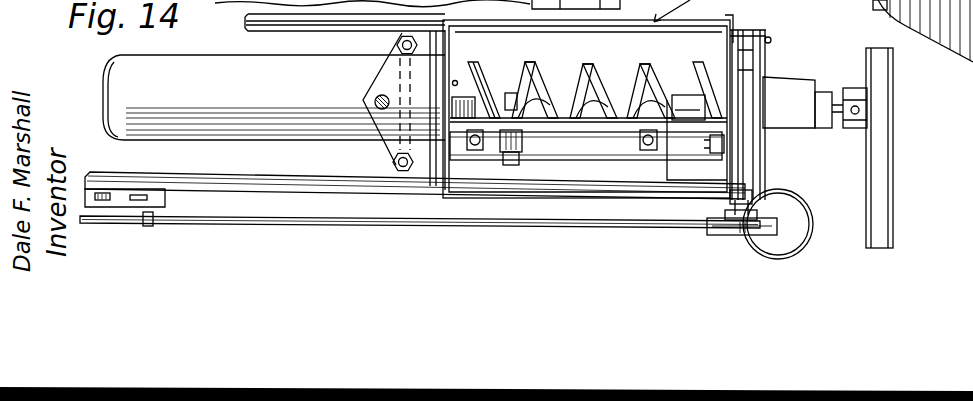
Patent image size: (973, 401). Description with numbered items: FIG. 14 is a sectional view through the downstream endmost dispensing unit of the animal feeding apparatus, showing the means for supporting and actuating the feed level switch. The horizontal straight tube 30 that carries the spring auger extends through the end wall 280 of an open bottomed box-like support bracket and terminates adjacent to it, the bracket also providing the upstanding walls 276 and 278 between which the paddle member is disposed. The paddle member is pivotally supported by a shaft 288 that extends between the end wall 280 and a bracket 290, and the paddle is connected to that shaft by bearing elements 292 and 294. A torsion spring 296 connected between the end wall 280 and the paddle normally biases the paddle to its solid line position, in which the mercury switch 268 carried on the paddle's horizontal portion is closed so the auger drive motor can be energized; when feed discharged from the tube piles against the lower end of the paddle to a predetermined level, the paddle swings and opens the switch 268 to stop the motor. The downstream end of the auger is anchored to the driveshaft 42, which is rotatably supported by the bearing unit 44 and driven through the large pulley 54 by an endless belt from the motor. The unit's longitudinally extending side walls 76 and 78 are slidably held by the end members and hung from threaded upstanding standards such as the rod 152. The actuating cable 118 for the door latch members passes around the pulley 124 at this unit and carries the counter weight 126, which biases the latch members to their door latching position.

The straight tube 30 is at (199, 63).
The side wall 78 is at (318, 30).
The torsion spring 296 is at (447, 112).
The upstanding rod or bolt-like standard 152 is at (376, 101).
The upstanding wall 276 is at (570, 32).
The end wall 280 is at (448, 42).
The shaft 288 is at (560, 100).
The mercury switch 268 is at (508, 93).
The driveshaft 42 is at (681, 95).
The upstanding wall 278 is at (560, 195).
The bearing element 292 is at (480, 150).
The bearing element 294 is at (641, 150).
The bracket 290 is at (668, 133).
The bearing unit 44 is at (798, 85).
The large pulley 54 is at (893, 118).
The counter weight 126 is at (796, 208).
The pulley 124 is at (720, 233).
The actuating element 118 is at (528, 225).
The side wall 76 is at (240, 178).